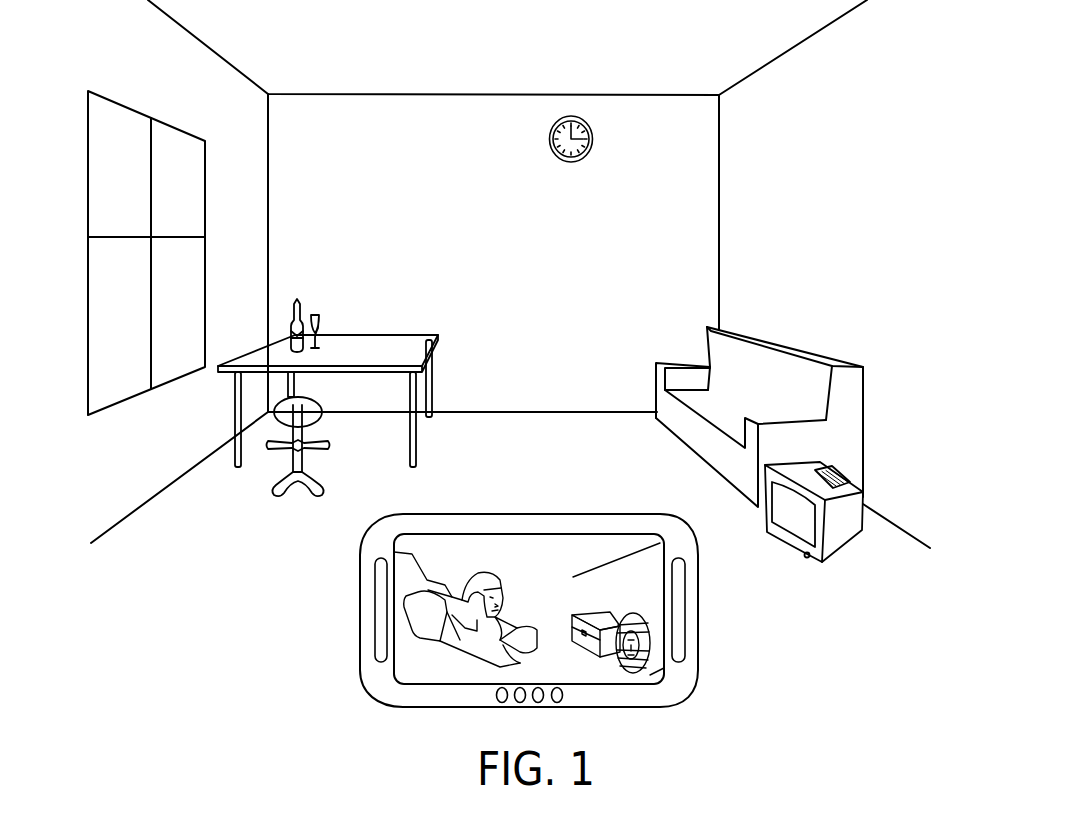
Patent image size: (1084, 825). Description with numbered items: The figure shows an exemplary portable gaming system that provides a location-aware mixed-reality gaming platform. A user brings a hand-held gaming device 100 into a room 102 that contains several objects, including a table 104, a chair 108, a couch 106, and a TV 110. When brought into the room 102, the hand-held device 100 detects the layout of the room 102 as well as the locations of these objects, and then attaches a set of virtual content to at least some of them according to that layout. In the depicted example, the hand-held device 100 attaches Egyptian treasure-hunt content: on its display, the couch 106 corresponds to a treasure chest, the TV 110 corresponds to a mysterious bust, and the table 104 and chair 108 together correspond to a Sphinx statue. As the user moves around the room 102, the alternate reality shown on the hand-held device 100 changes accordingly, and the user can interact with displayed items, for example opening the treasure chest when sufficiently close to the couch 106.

The hand-held gaming device 100 is at (560, 513).
The room 102 is at (440, 112).
The table 104 is at (410, 347).
The couch 106 is at (747, 328).
The chair 108 is at (323, 478).
The TV 110 is at (855, 532).